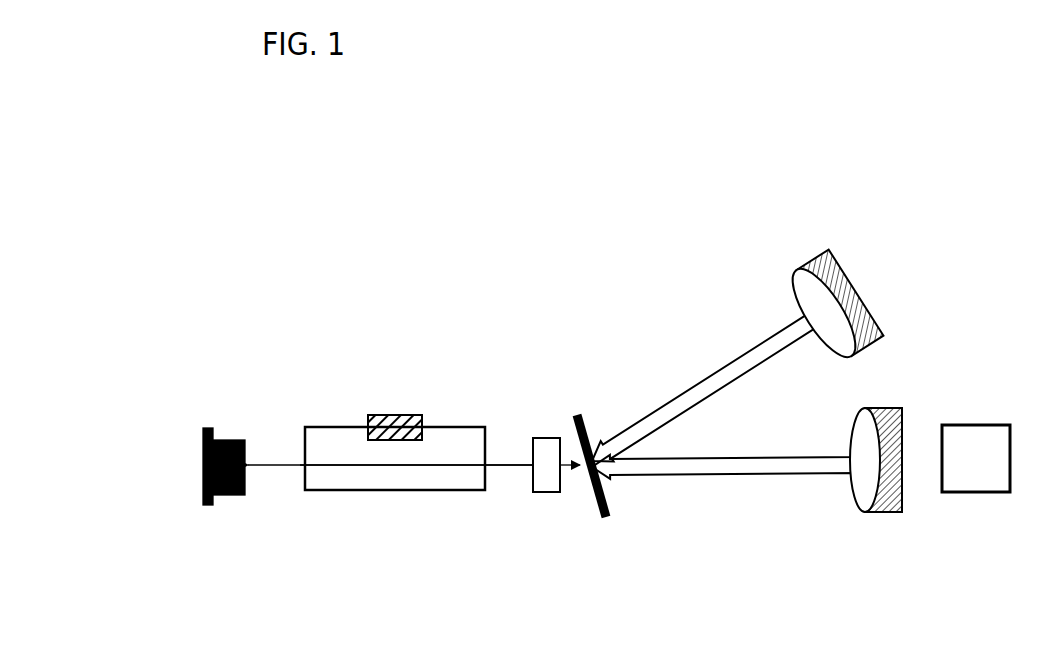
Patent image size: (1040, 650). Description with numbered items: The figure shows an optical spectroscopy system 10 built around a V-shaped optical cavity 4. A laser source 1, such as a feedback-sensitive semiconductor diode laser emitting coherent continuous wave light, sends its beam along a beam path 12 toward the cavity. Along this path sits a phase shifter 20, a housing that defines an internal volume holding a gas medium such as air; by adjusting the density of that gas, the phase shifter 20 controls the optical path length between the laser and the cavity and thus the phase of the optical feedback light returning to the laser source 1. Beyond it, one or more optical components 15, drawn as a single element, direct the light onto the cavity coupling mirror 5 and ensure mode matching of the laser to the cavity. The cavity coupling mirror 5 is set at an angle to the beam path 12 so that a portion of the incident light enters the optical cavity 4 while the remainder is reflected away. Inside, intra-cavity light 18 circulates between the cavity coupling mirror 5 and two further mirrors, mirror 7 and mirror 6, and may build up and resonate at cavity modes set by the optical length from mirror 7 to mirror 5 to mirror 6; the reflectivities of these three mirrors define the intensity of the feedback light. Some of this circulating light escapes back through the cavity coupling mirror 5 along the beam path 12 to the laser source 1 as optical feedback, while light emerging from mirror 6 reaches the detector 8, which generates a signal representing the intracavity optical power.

The laser source 1 is at (248, 467).
The optical cavity 4 is at (712, 385).
The cavity coupling mirror 5 is at (634, 496).
The cavity mirror 6 is at (870, 494).
The cavity mirror 7 is at (795, 308).
The detector 8 is at (973, 465).
The optical spectroscopy system 10 is at (558, 378).
The beam path 12 is at (503, 465).
The optical components 15 is at (547, 492).
The intra-cavity light 18 is at (735, 473).
The phase shifter 20 is at (435, 492).